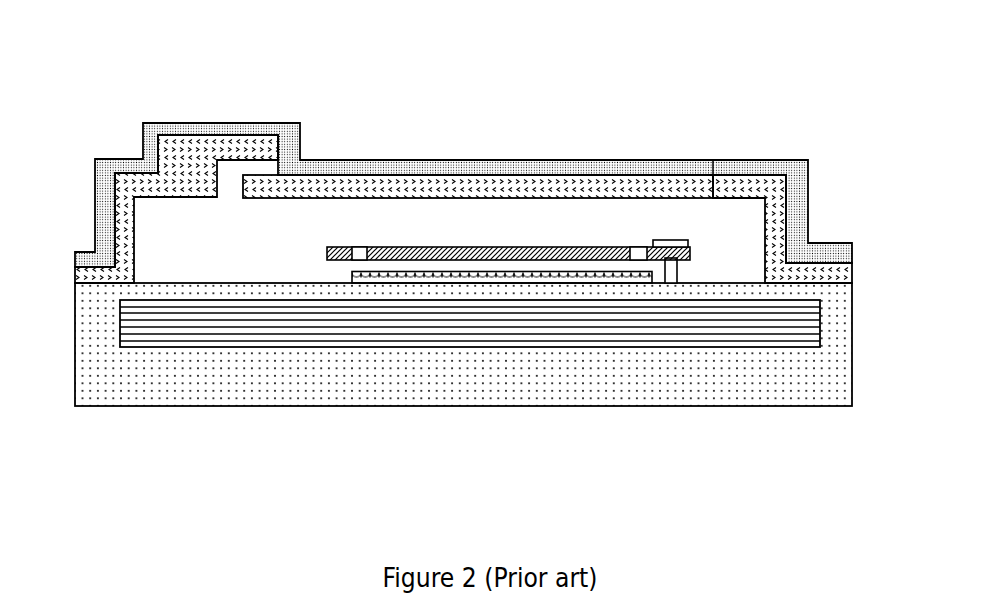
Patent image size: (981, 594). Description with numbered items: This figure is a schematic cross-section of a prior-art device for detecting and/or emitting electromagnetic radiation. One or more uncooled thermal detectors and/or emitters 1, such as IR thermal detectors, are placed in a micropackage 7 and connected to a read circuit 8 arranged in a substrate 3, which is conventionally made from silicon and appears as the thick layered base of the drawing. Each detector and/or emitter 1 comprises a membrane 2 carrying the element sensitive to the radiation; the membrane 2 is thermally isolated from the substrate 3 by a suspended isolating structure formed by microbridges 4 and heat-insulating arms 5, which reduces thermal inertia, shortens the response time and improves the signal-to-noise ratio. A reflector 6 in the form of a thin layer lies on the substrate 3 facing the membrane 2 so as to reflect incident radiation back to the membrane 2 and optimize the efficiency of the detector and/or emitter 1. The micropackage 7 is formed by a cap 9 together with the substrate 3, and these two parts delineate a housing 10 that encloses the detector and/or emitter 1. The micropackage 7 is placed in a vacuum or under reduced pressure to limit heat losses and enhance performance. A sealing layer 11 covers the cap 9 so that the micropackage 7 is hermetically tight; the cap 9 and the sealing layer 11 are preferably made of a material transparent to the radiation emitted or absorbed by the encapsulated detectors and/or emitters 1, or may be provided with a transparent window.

The uncooled thermal detector and/or emitter 1 is at (505, 220).
The membrane 2 is at (440, 247).
The substrate 3 is at (528, 375).
The microbridge 4 is at (672, 262).
The heat-insulating arm 5 is at (667, 243).
The reflector 6 is at (430, 277).
The micropackage 7 is at (708, 118).
The read circuit 8 is at (300, 338).
The cap 9 is at (180, 152).
The housing 10 is at (338, 222).
The sealing layer 11 is at (290, 128).